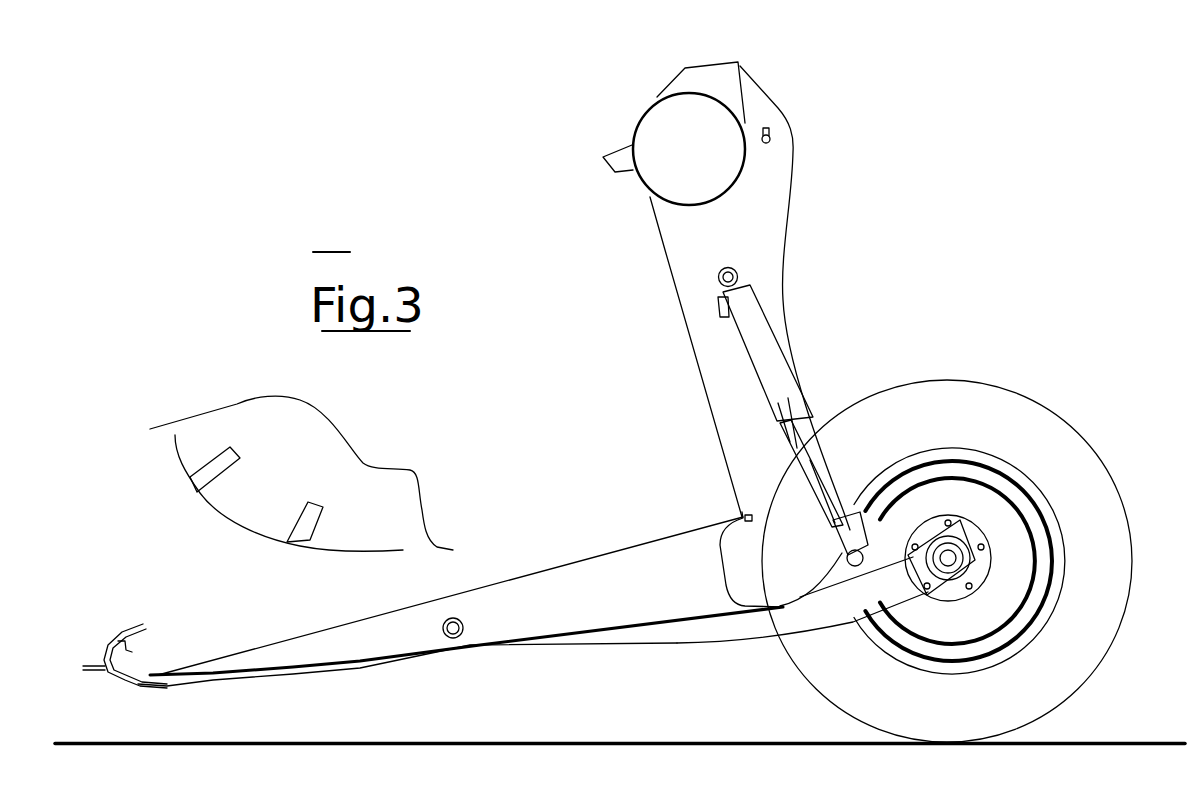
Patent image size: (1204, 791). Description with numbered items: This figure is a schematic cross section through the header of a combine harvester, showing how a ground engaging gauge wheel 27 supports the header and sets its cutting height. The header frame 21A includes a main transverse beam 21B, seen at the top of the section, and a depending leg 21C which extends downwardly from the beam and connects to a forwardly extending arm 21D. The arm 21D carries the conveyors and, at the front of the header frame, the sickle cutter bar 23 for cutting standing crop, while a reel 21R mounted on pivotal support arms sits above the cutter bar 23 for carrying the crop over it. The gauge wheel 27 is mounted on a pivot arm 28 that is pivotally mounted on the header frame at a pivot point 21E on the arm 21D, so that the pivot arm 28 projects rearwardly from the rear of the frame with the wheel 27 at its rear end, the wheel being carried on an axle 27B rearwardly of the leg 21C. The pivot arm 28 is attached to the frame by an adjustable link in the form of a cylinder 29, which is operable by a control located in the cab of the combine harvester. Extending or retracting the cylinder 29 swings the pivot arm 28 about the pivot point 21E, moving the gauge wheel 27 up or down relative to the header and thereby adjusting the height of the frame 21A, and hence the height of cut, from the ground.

The header frame 21A is at (798, 239).
The main transverse beam 21B is at (713, 92).
The depending leg 21C is at (708, 372).
The forwardly extending arm 21D is at (587, 573).
The pivot point 21E is at (453, 638).
The reel 21R is at (232, 422).
The cutter bar 23 is at (135, 568).
The gauge wheel 27 is at (984, 407).
The axle 27B is at (958, 527).
The pivot arm 28 is at (703, 627).
The cylinder 29 is at (757, 330).